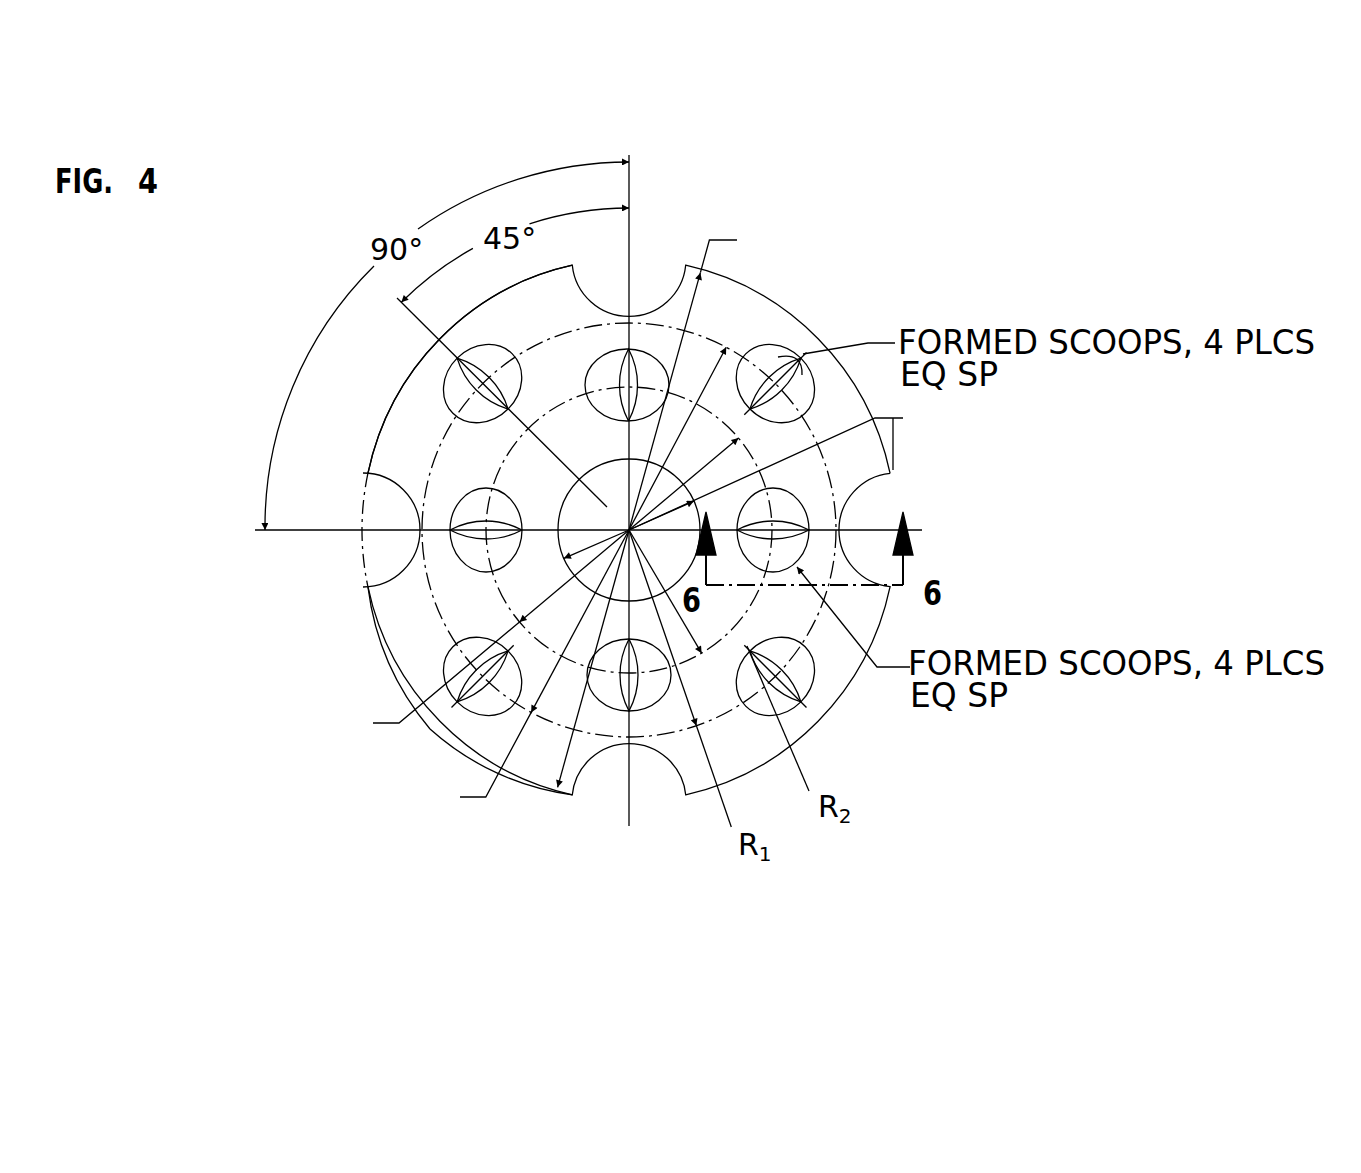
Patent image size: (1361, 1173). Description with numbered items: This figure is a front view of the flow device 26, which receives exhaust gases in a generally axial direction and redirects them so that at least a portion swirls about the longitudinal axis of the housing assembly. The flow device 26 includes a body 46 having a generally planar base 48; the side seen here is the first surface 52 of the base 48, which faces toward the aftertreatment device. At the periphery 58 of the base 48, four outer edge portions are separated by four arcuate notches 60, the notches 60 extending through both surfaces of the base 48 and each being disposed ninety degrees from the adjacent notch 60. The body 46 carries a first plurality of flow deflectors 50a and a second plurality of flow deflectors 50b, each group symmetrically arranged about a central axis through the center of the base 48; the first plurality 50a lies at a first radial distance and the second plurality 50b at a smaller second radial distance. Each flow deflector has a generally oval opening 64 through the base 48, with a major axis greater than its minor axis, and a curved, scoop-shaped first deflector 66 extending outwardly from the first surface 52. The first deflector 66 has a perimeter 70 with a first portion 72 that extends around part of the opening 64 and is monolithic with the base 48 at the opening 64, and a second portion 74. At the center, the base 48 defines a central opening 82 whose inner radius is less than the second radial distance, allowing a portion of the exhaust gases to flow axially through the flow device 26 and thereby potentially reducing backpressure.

The flow device 26 is at (278, 316).
The body 46 is at (796, 304).
The base 48 is at (398, 645).
The first plurality of flow deflectors 50a is at (815, 699).
The second plurality of flow deflectors 50b is at (814, 507).
The first surface 52 is at (754, 758).
The periphery 58 is at (477, 738).
The notches 60 is at (397, 494).
The opening 64 is at (488, 358).
The first deflector 66 is at (791, 342).
The perimeter 70 is at (763, 342).
The first portion 72 is at (753, 342).
The second portion 74 is at (812, 374).
The central opening 82 is at (688, 572).